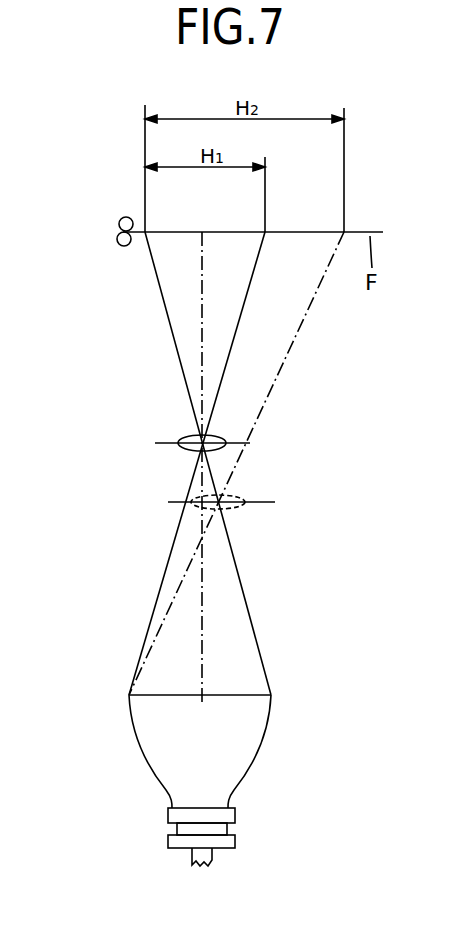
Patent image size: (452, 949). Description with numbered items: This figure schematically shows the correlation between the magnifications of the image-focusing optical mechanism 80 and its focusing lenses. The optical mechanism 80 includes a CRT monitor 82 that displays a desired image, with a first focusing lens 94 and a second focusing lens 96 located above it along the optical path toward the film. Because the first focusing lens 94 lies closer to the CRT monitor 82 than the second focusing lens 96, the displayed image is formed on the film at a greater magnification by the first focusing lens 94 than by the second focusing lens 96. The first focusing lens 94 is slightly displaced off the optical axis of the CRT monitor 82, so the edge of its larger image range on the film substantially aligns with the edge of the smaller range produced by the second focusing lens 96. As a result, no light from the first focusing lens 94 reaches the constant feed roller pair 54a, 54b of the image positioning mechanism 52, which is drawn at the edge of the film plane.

The image positioning mechanism 52 is at (87, 214).
The constant feed roller 54a is at (113, 226).
The constant feed roller 54b is at (124, 216).
The image-focusing optical mechanism 80 is at (241, 711).
The CRT monitor 82 is at (271, 697).
The first focusing lens 94 is at (242, 498).
The second focusing lens 96 is at (180, 438).